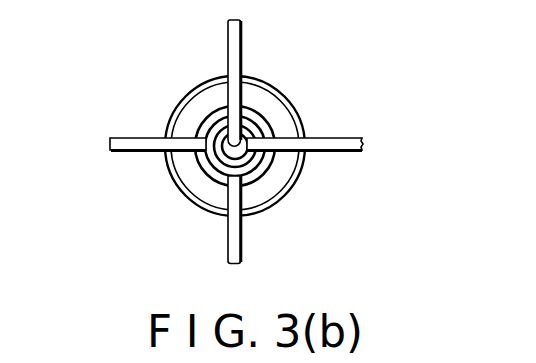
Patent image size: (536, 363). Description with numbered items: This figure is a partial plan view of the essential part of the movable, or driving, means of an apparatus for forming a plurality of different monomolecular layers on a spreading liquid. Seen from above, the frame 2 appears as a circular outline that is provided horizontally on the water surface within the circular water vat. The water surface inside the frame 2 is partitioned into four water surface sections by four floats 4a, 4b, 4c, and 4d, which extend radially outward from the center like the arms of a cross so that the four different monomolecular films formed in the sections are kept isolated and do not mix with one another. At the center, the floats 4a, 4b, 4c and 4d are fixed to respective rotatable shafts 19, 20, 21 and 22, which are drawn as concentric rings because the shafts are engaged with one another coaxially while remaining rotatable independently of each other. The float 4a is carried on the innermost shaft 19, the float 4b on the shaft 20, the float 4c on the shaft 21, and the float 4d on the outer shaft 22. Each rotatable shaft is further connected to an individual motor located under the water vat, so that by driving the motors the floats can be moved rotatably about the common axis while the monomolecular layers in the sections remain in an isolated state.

The frame 2 is at (206, 82).
The float 4a is at (242, 38).
The float 4b is at (340, 154).
The float 4c is at (227, 238).
The float 4d is at (138, 136).
The rotatable shaft 19 is at (246, 138).
The rotatable shaft 20 is at (270, 173).
The rotatable shaft 21 is at (208, 158).
The rotatable shaft 22 is at (204, 120).